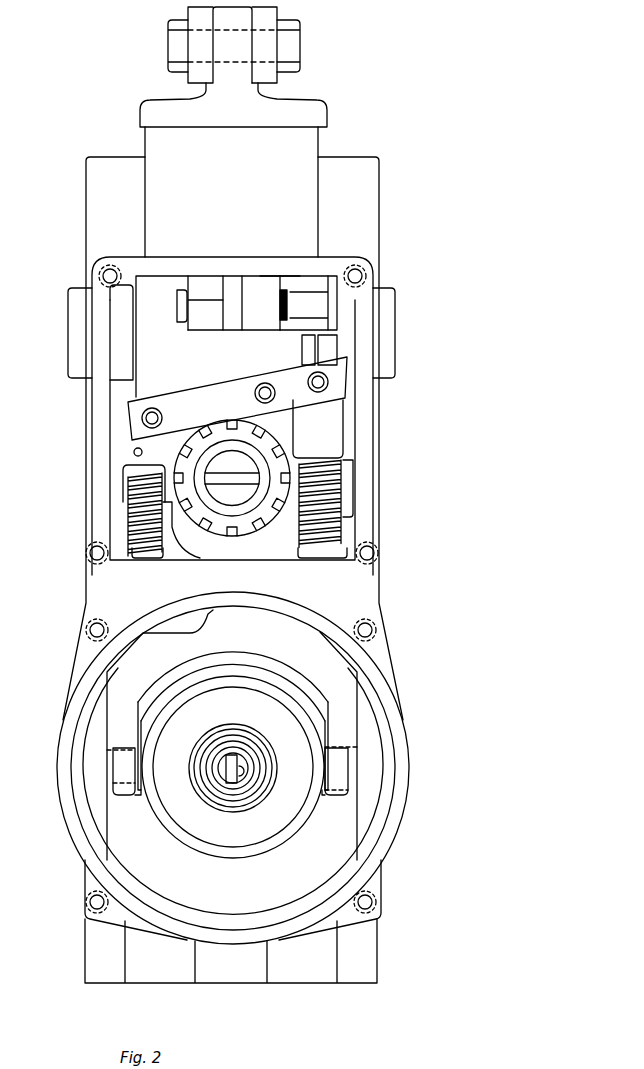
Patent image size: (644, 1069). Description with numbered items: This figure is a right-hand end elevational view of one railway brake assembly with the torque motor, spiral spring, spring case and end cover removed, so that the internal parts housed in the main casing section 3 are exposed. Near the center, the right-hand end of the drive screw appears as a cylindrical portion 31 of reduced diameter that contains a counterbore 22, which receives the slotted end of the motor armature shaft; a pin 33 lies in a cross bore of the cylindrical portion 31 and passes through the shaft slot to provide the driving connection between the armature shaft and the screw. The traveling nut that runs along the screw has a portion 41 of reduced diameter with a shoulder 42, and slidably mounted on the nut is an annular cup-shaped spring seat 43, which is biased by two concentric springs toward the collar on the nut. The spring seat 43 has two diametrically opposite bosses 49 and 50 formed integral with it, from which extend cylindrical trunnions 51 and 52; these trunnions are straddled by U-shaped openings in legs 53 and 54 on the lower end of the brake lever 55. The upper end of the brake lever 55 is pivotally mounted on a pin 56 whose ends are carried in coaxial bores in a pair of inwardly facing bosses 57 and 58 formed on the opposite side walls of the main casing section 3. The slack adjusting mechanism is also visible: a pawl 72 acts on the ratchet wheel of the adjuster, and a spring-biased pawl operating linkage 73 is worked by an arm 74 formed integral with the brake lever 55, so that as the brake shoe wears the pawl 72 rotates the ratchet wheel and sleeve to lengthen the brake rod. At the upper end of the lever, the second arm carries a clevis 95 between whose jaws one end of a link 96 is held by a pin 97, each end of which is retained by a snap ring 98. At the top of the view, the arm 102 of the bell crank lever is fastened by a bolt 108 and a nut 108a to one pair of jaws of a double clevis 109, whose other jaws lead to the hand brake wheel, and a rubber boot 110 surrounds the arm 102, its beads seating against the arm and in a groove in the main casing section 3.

The main casing section 3 is at (361, 592).
The counterbore 22 is at (240, 775).
The cylindrical portion 31 is at (247, 757).
The pin 33 is at (228, 773).
The portion of reduced diameter 41 is at (208, 742).
The shoulder 42 is at (232, 727).
The cup-shaped spring seat 43 is at (232, 842).
The boss 49 is at (145, 787).
The boss 50 is at (318, 788).
The trunnion 51 is at (112, 763).
The trunnion 52 is at (347, 772).
The leg 53 is at (122, 734).
The leg 54 is at (340, 732).
The brake lever 55 is at (310, 648).
The pin 56 is at (132, 318).
The boss 57 is at (115, 351).
The boss 58 is at (348, 365).
The pawl 72 is at (132, 457).
The pawl operating linkage 73 is at (201, 386).
The arm 74 is at (318, 315).
The clevis 95 is at (223, 325).
The link 96 is at (227, 310).
The pin 97 is at (178, 309).
The snap ring 98 is at (283, 276).
The arm 102 is at (213, 75).
The bolt 108 is at (170, 47).
The nut 108a is at (297, 45).
The double clevis 109 is at (262, 73).
The rubber boot 110 is at (308, 110).